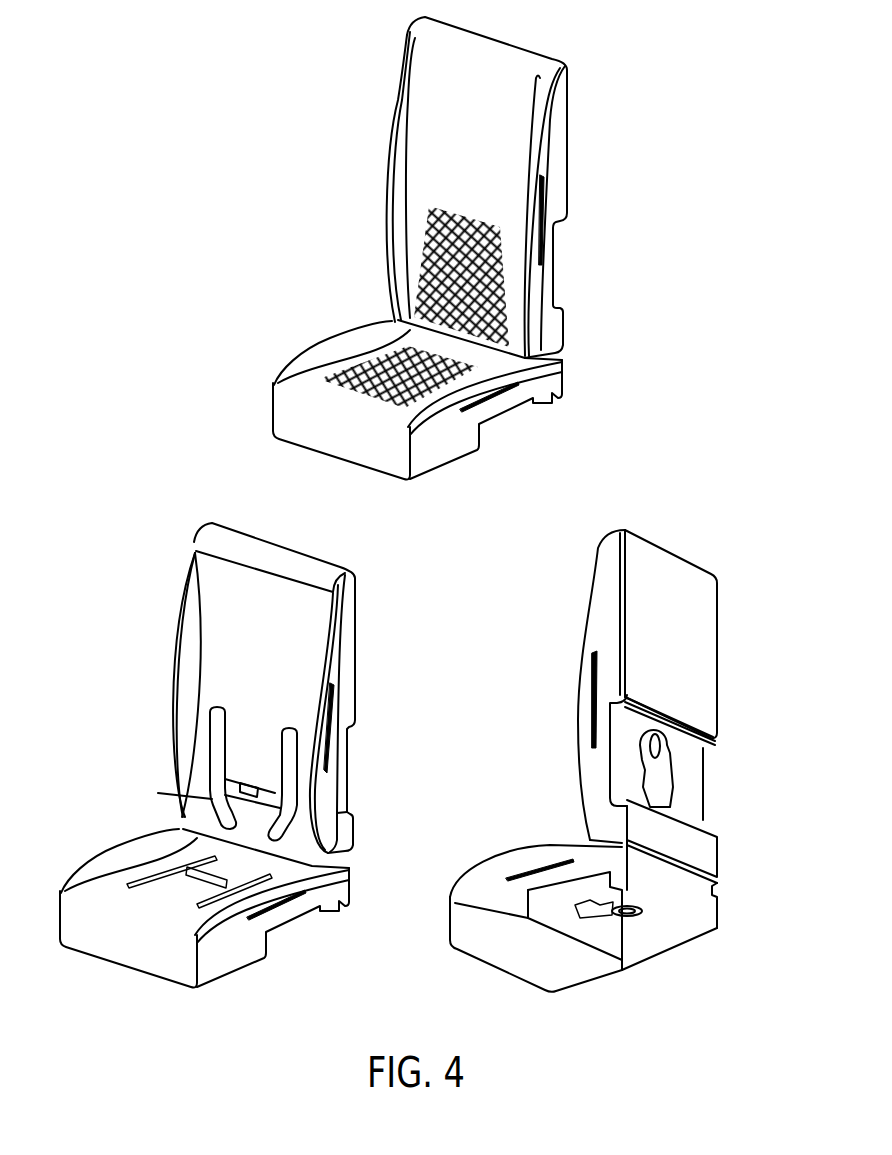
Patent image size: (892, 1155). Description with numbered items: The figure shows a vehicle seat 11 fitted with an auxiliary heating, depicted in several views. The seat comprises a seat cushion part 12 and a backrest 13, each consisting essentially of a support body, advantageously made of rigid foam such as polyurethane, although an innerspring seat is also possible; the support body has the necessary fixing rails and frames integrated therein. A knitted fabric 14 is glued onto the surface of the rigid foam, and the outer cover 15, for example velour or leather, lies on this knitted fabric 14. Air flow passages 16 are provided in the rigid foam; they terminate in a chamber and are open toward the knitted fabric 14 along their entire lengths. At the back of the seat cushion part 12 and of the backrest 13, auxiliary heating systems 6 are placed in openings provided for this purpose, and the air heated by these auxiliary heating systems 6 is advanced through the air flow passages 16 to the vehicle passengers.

The seat assembly 11 is at (421, 504).
The seat cushion part 12 is at (341, 332).
The backrest 13 is at (366, 142).
The knitted fabric 14 is at (500, 292).
The outer cover 15 is at (477, 169).
The air flow passages 16 is at (213, 791).
The auxiliary heating systems 6 is at (678, 785).